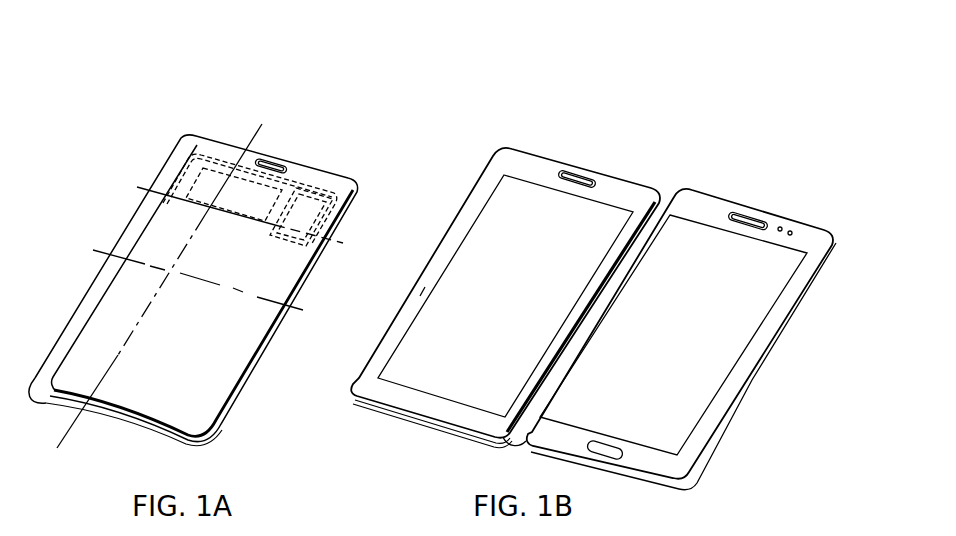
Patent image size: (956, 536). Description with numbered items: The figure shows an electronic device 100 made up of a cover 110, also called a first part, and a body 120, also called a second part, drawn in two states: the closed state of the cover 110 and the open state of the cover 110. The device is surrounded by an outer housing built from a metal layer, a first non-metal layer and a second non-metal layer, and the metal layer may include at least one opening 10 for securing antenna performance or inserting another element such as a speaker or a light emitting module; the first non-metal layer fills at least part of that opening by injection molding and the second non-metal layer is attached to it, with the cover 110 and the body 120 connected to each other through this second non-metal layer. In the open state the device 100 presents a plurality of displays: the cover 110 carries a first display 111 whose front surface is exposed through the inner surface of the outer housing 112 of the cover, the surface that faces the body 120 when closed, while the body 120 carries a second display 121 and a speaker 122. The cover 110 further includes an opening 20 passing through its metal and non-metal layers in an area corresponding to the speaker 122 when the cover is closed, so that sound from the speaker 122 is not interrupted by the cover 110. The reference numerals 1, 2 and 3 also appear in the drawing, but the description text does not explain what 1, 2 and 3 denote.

In FIG. 1A, the electronic device 100 is at (151, 115).
In FIG. 1B, the electronic device 100 is at (653, 100).
In FIG. 1A, the cover 1 is at (93, 250).
In FIG. 1A, the pocket / receiving portion 2 is at (137, 187).
In FIG. 1A, the folding axis 3 is at (262, 124).
In FIG. 1A, the opening 10 is at (217, 168).
In FIG. 1A, the opening 20 is at (277, 160).
In FIG. 1B, the opening 20 is at (580, 178).
In FIG. 1A, the cover 110 is at (326, 172).
In FIG. 1B, the cover 110 is at (549, 150).
In FIG. 1B, the first display 111 is at (503, 222).
In FIG. 1B, the outer housing 112 is at (425, 287).
In FIG. 1A, the body 120 is at (362, 197).
In FIG. 1B, the body 120 is at (793, 217).
In FIG. 1B, the second display 121 is at (737, 347).
In FIG. 1B, the speaker 122 is at (752, 218).